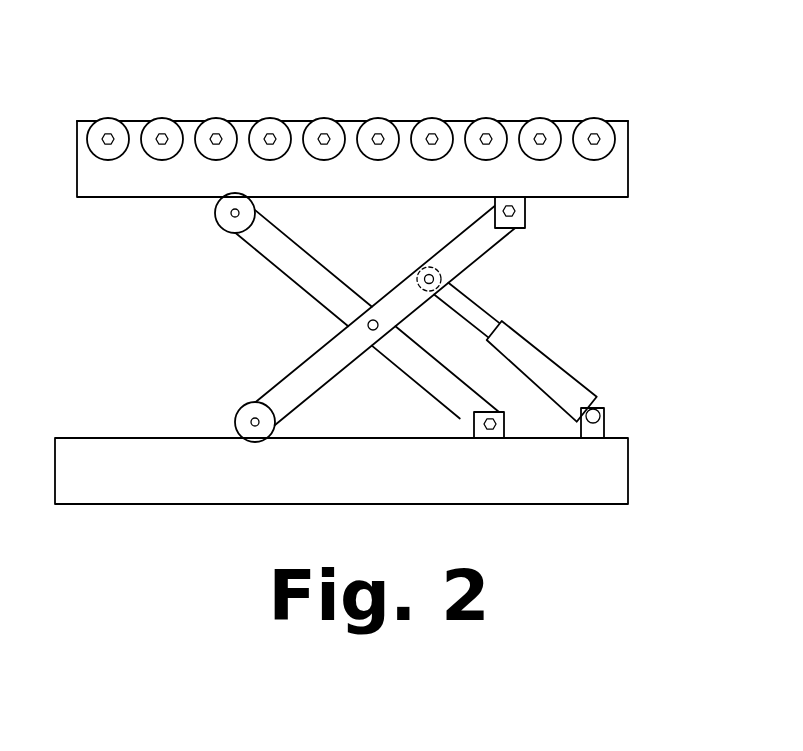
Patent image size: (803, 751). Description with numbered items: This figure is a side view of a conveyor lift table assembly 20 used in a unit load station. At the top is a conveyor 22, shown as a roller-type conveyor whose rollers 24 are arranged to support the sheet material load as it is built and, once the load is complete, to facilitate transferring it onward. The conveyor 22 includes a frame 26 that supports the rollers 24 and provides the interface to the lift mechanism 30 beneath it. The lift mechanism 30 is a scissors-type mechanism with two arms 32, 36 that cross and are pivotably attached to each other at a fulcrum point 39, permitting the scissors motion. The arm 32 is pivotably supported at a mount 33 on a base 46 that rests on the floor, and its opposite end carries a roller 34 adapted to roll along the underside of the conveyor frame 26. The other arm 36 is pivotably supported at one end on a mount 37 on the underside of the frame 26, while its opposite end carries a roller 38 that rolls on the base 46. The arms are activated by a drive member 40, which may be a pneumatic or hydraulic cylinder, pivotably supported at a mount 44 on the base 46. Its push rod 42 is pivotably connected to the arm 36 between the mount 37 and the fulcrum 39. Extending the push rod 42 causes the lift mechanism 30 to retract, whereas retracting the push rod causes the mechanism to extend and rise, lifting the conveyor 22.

The lift table assembly 20 is at (392, 124).
The conveyor 22 is at (196, 120).
The rollers 24 is at (109, 126).
The frame 26 is at (615, 172).
The lift mechanism 30 is at (408, 317).
The arm 32 is at (272, 260).
The mount 33 is at (484, 424).
The roller 34 is at (216, 206).
The arm 36 is at (288, 390).
The mount 37 is at (514, 211).
The roller 38 is at (251, 422).
The fulcrum point 39 is at (377, 318).
The drive member 40 is at (568, 386).
The push rod 42 is at (424, 274).
The mount 44 is at (604, 416).
The base 46 is at (612, 472).